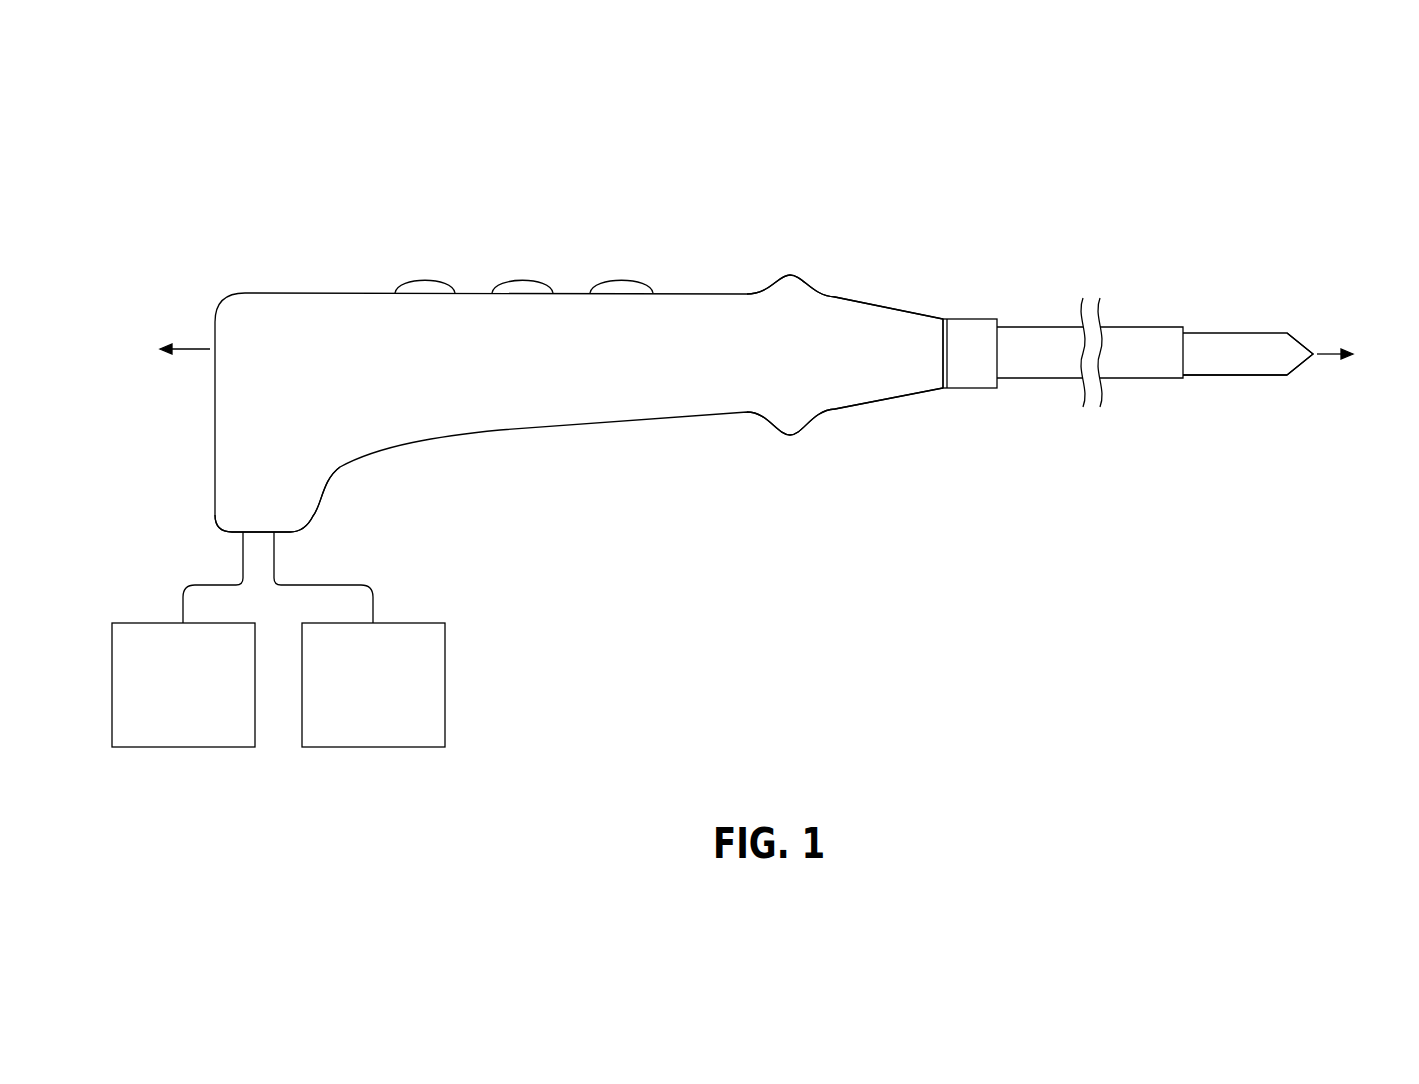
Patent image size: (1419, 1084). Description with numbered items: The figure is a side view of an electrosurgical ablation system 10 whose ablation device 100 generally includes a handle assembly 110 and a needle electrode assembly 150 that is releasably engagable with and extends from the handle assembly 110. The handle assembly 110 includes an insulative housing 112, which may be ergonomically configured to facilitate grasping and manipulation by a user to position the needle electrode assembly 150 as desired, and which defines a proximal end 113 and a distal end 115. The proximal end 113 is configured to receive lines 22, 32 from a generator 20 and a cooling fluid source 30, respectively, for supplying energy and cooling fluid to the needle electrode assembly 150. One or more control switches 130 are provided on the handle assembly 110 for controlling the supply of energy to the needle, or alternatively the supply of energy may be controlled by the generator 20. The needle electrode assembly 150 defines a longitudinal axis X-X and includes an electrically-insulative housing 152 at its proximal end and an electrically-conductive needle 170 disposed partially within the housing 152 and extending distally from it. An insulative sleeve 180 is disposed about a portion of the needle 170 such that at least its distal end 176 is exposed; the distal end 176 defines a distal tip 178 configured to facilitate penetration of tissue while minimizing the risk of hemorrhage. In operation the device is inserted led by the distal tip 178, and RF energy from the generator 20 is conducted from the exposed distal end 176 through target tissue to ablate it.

The ablation system 10 is at (803, 203).
The ablation device 100 is at (877, 288).
The handle assembly 110 is at (595, 413).
The housing 112 is at (722, 417).
The proximal end 113 is at (315, 498).
The distal end 115 is at (838, 395).
The control switches 130 is at (622, 275).
The housing 152 is at (972, 378).
The needle electrode assembly 150 is at (1142, 400).
The insulative sleeve 180 is at (1132, 335).
The needle 170 is at (1232, 340).
The distal end 176 is at (1268, 377).
The distal tip 178 is at (1312, 352).
The generator 20 is at (197, 699).
The line 22 is at (210, 582).
The cooling fluid source 30 is at (387, 699).
The line 32 is at (348, 582).